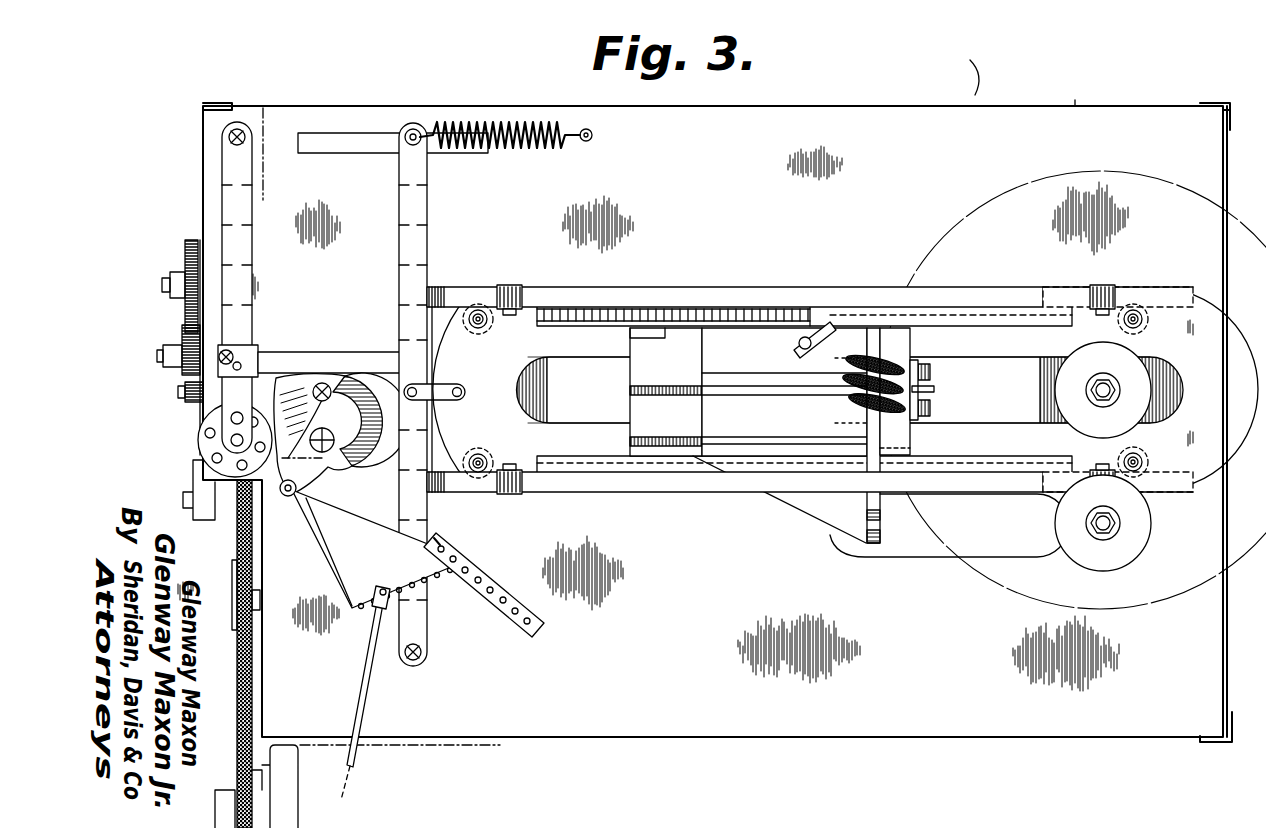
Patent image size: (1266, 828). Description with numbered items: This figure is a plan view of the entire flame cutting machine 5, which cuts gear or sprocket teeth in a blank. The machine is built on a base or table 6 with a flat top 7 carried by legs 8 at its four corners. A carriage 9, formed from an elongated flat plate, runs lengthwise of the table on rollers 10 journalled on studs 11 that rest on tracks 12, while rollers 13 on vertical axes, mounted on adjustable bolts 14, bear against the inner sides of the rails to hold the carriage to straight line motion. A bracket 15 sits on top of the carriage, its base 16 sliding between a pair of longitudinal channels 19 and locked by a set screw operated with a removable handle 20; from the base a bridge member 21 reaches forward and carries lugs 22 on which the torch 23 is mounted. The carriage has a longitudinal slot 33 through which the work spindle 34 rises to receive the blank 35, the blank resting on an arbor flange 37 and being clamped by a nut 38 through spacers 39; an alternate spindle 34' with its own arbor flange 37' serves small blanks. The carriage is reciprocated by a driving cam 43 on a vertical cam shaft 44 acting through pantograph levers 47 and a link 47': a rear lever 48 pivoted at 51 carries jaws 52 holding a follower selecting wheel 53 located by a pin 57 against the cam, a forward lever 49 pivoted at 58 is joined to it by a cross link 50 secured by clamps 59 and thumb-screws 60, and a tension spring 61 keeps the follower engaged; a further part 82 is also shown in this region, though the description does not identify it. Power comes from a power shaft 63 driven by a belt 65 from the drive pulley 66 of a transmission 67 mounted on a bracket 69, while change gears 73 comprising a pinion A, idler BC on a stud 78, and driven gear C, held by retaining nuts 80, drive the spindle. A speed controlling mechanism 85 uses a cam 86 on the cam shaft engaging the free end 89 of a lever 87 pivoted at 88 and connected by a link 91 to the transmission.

The flame cutting machine 5 is at (985, 60).
The base or table 6 is at (1075, 104).
The table top 7 is at (1160, 100).
The legs 8 is at (205, 104).
The carriage 9 is at (540, 288).
The rollers 10 is at (508, 285).
The studs 11 is at (514, 310).
The tracks 12 is at (440, 286).
The rollers 13 is at (492, 322).
The bolts 14 is at (480, 308).
The bracket 15 is at (748, 412).
The base 16 is at (635, 382).
The longitudinal rails or channels 19 is at (825, 302).
The wrench or handle 20 is at (800, 360).
The bridge member 21 is at (835, 456).
The lugs 22 is at (880, 545).
The torch 23 is at (935, 388).
The longitudinal slot 33 is at (935, 350).
The arbor or work spindle 34 is at (1103, 389).
The alternate spindle 34' is at (1103, 528).
The gear or sprocket blank 35 is at (960, 210).
The arbor flange 37 is at (1128, 404).
The alternate arbor flange 37' is at (1139, 567).
The nut 38 is at (1085, 390).
The spacers 39 is at (1095, 385).
The driving cam 43 is at (362, 445).
The cam shaft 44 is at (330, 448).
The pantograph levers 47 is at (384, 103).
The link 47' is at (455, 384).
The lever 48 is at (258, 275).
The lever 49 is at (430, 225).
The cross link 50 is at (362, 355).
The pivot 51 is at (237, 122).
The jaws 52 is at (165, 355).
The follower selecting wheel 53 is at (198, 440).
The locater pin 57 is at (240, 418).
The pivot 58 is at (425, 660).
The clamps 59 is at (410, 358).
The thumb-screws 60 is at (235, 348).
The tension spring 61 is at (492, 125).
The power shaft 63 is at (178, 392).
The belt 65 is at (238, 700).
The drive pulley 66 is at (232, 785).
The transmission mechanism 67 is at (330, 805).
The bracket 69 is at (265, 745).
The change gears 73 is at (160, 285).
The stud 78 is at (160, 352).
The retaining nuts 80 is at (172, 280).
The cam pivot 82 is at (322, 383).
The speed controlling mechanism 85 is at (330, 580).
The cam 86 is at (298, 496).
The lever 87 is at (372, 580).
The pivot 88 is at (470, 572).
The free end 89 is at (312, 505).
The link 91 is at (365, 680).
The drive pinion A is at (200, 414).
The driven gear C is at (190, 238).
The idler gear BC is at (188, 345).